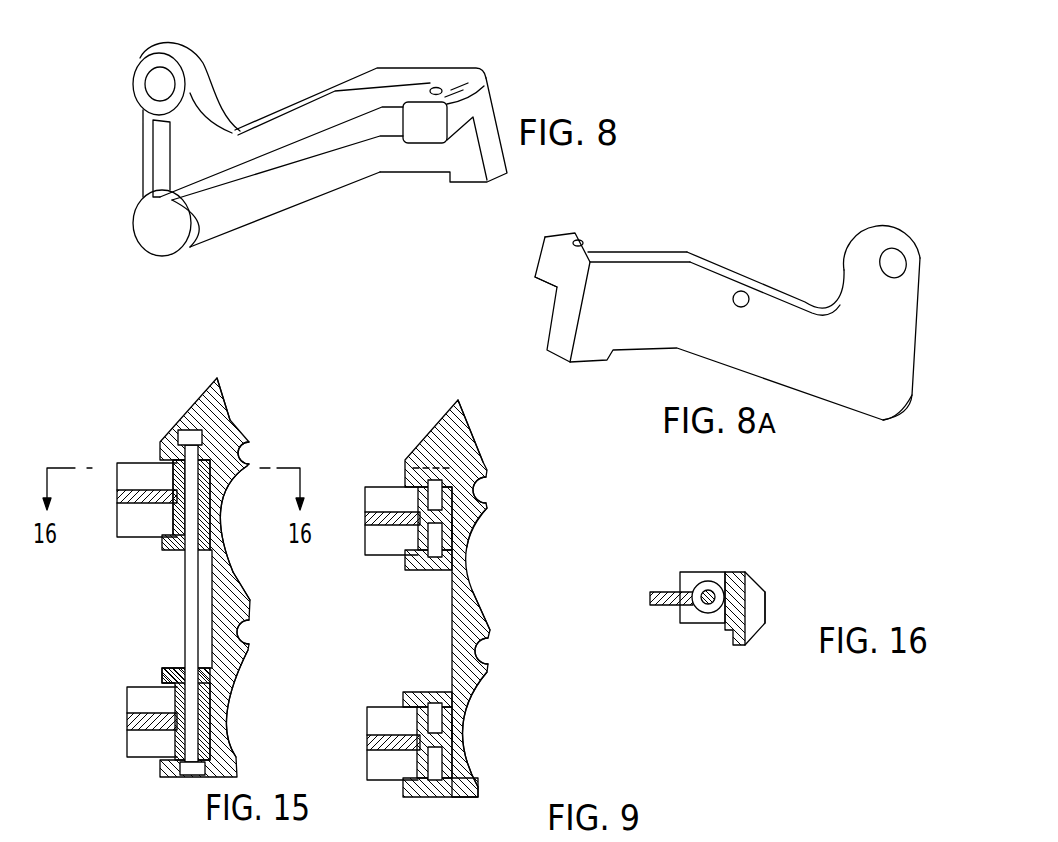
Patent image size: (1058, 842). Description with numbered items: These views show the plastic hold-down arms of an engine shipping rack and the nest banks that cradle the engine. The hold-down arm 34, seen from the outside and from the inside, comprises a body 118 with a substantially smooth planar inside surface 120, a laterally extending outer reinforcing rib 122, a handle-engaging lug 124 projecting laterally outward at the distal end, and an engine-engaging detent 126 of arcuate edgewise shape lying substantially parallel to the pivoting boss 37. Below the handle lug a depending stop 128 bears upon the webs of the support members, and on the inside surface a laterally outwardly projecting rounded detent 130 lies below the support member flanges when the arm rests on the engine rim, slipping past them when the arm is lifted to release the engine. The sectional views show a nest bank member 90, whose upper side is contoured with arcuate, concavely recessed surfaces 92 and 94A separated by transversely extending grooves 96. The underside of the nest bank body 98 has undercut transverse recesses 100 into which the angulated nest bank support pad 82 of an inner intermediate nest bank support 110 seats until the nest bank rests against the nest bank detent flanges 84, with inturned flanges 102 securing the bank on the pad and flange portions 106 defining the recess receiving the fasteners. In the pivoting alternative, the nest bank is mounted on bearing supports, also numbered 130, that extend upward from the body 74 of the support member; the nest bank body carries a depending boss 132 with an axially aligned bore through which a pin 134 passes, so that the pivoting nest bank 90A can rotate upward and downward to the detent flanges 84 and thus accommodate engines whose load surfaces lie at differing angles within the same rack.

In FIG. 8, the hold-down arm 34 is at (333, 84).
In FIG. 8A, the hold-down arm 34 is at (642, 254).
In FIG. 8, the pivoting boss 37 is at (171, 52).
In FIG. 8A, the pivoting boss 37 is at (882, 228).
In FIG. 8, the body 118 is at (282, 122).
In FIG. 8A, the body 118 is at (743, 283).
In FIG. 8A, the inside surface 120 is at (838, 383).
In FIG. 8, the outer reinforcing rib 122 is at (287, 160).
In FIG. 8, the handle-engaging lug 124 is at (460, 106).
In FIG. 8A, the handle-engaging lug 124 is at (560, 257).
In FIG. 8, the engine-engaging detent 126 is at (162, 238).
In FIG. 8A, the engine-engaging detent 126 is at (878, 403).
In FIG. 8, the depending stop 128 is at (465, 162).
In FIG. 8A, the depending stop 128 is at (560, 320).
In FIG. 8A, the rounded detent 130 is at (745, 306).
In FIG. 15, the rounded detent 130 is at (175, 520).
In FIG. 16, the rounded detent 130 is at (695, 580).
In FIG. 15, the depending boss 132 is at (178, 665).
In FIG. 15, the pin 134 is at (192, 538).
In FIG. 16, the pin 134 is at (712, 583).
In FIG. 15, the body 74 is at (130, 490).
In FIG. 9, the body 74 is at (387, 502).
In FIG. 16, the body 74 is at (688, 618).
In FIG. 9, the nest bank support pad 82 is at (407, 525).
In FIG. 9, the nest bank detent flange 84 is at (467, 447).
In FIG. 9, the nest bank member 90 is at (467, 580).
In FIG. 15, the pivoting nest bank 90A is at (235, 682).
In FIG. 16, the pivoting nest bank 90A is at (762, 580).
In FIG. 15, the concavely recessed surface 92 is at (230, 550).
In FIG. 9, the concavely recessed surface 92 is at (468, 590).
In FIG. 15, the concavely recessed surface 94A is at (230, 420).
In FIG. 9, the concavely recessed surface 94A is at (463, 407).
In FIG. 15, the transverse groove 96 is at (247, 455).
In FIG. 9, the transverse groove 96 is at (477, 490).
In FIG. 16, the transverse groove 96 is at (755, 602).
In FIG. 15, the nest bank body 98 is at (226, 510).
In FIG. 9, the nest bank body 98 is at (487, 520).
In FIG. 9, the undercut transverse recess 100 is at (448, 528).
In FIG. 9, the inturned flange 102 is at (408, 482).
In FIG. 9, the flange portion 106 is at (415, 458).
In FIG. 15, the inner intermediate nest bank support 110 is at (145, 463).
In FIG. 9, the inner intermediate nest bank support 110 is at (363, 537).
In FIG. 16, the inner intermediate nest bank support 110 is at (702, 597).